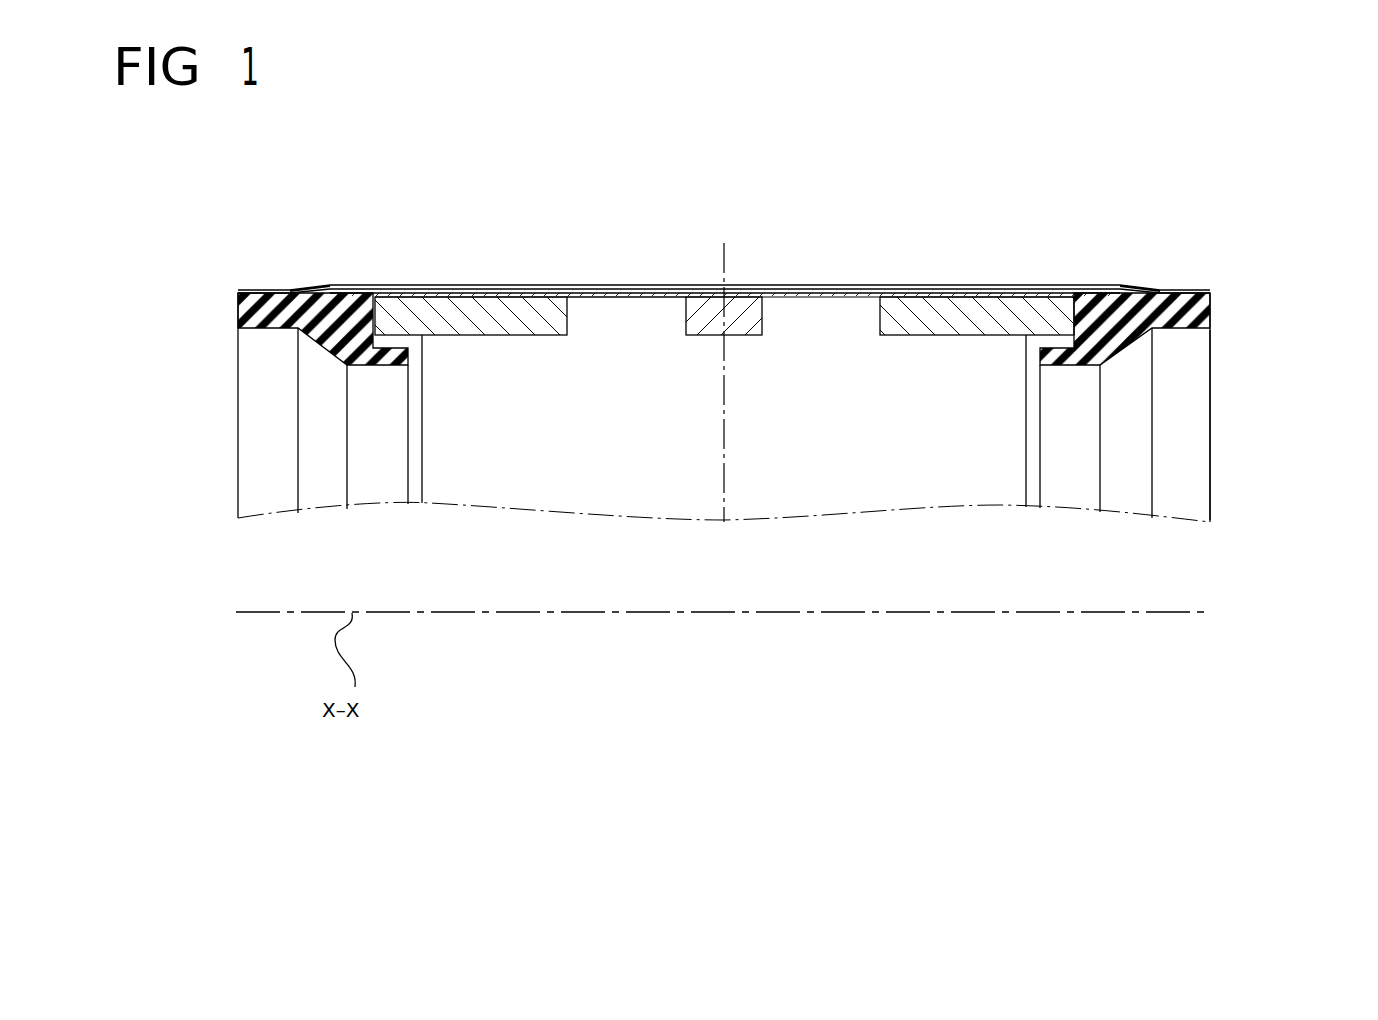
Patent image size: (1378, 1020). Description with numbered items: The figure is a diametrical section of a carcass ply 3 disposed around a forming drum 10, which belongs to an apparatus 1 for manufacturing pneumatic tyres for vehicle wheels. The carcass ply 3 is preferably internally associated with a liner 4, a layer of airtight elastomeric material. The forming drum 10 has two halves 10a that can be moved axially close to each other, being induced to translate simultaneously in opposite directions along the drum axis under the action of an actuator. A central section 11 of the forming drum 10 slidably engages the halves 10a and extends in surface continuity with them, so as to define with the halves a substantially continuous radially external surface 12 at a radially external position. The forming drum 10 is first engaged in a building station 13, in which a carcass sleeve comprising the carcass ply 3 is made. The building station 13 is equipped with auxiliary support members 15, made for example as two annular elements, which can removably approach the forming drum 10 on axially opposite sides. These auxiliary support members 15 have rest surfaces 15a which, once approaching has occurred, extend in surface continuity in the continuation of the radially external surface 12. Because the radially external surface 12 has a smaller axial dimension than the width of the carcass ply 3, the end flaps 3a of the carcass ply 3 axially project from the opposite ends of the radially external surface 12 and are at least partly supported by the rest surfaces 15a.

The apparatus 1 is at (243, 573).
The carcass ply 3 is at (989, 285).
The end flaps 3a is at (337, 285).
The liner 4 is at (623, 292).
The forming drum 10 is at (501, 350).
The halves 10a is at (535, 325).
The central section 11 is at (745, 323).
The radially external surface 12 is at (868, 293).
The building station 13 is at (1275, 426).
The auxiliary support members 15 is at (250, 317).
The rest surfaces 15a is at (238, 293).